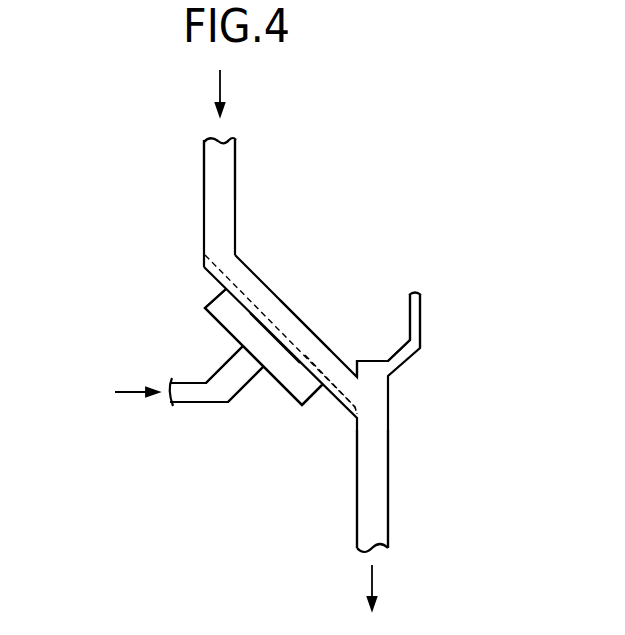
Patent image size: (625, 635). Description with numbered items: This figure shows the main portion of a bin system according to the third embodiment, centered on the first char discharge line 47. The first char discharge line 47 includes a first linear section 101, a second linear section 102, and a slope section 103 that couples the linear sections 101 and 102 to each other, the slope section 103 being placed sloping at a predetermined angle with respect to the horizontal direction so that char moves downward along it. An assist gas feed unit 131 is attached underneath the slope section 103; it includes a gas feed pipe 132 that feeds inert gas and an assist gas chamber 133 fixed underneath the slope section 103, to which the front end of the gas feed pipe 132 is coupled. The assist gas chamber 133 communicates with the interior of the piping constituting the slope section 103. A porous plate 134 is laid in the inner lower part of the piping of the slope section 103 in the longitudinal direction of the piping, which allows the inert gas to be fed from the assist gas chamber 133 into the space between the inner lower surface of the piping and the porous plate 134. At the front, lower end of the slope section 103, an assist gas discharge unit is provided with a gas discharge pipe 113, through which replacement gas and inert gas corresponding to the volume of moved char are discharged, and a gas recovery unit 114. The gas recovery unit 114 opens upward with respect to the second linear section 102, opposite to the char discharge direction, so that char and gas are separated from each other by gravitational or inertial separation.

The first char discharge line 47 is at (234, 218).
The first linear section 101 is at (228, 158).
The second linear section 102 is at (383, 518).
The slope section 103 is at (282, 308).
The gas discharge pipe 113 is at (417, 317).
The gas recovery unit 114 is at (373, 370).
The assist gas feed unit 131 is at (164, 315).
The gas feed pipe 132 is at (197, 395).
The assist gas chamber 133 is at (290, 380).
The porous plate 134 is at (317, 362).